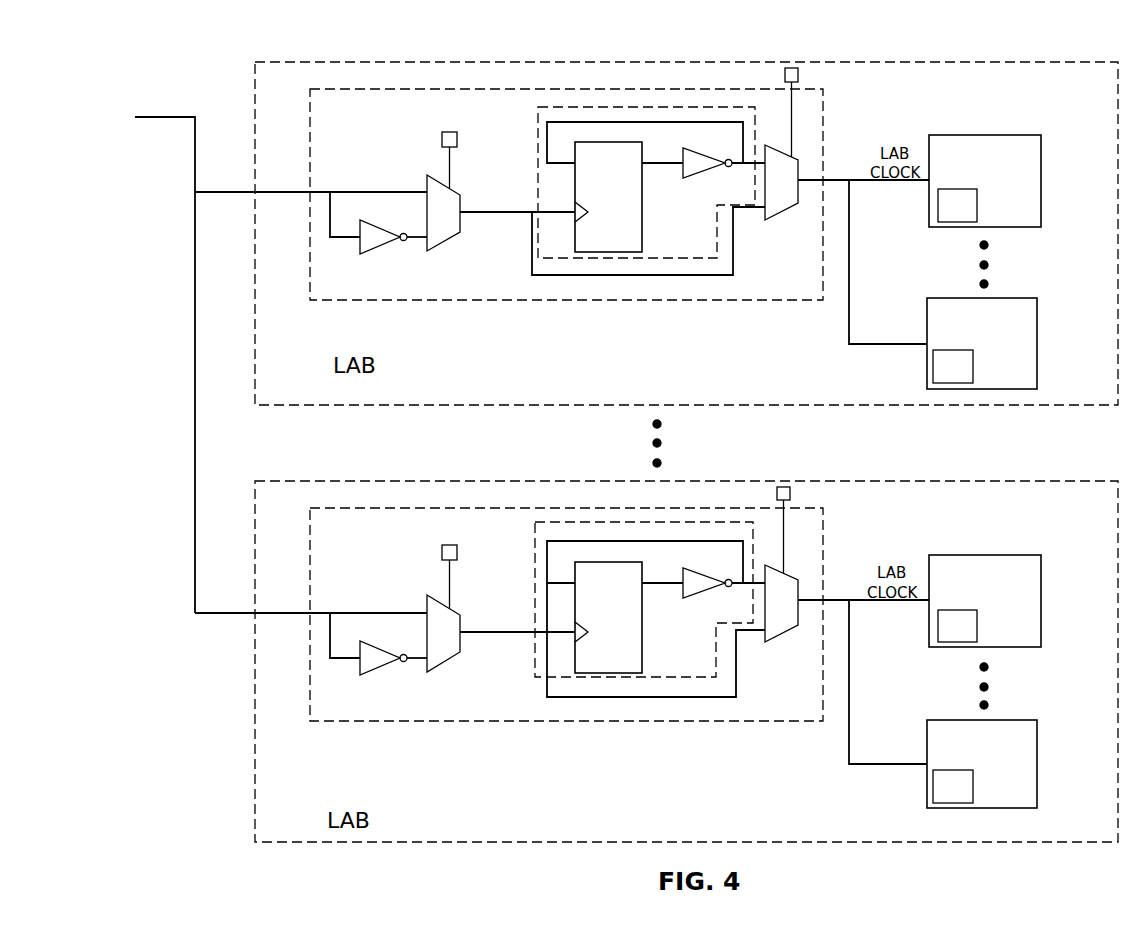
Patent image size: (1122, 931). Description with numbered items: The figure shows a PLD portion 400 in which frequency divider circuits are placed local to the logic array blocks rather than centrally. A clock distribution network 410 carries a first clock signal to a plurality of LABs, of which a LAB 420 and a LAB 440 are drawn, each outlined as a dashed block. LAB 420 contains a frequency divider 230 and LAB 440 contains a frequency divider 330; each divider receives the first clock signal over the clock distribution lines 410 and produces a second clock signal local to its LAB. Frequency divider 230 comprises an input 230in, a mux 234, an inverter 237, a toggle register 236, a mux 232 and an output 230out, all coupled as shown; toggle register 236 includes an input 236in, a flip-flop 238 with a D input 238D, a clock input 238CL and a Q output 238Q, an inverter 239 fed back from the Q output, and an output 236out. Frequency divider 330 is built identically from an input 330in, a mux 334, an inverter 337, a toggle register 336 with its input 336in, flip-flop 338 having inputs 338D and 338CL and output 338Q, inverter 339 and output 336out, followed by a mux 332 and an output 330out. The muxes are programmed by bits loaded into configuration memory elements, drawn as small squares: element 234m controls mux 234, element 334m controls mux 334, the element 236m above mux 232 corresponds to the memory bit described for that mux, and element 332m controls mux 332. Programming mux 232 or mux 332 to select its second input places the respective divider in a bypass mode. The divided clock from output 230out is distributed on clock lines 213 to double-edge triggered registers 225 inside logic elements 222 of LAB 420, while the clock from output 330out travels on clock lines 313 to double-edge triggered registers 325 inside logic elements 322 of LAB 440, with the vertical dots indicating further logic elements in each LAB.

The PLD portion 400 is at (342, 879).
The clock distribution network 410 is at (180, 116).
The LAB 420 is at (255, 293).
The LAB 440 is at (254, 740).
The frequency divider 230 is at (583, 300).
The frequency divider 330 is at (518, 722).
The input 230in is at (305, 191).
The input 330in is at (300, 612).
The output 230out is at (825, 177).
The output 330out is at (825, 597).
The mux 234 is at (447, 242).
The mux 334 is at (447, 662).
The configuration memory element 234m is at (441, 139).
The configuration memory element 334m is at (441, 552).
The inverter 237 is at (368, 253).
The inverter 337 is at (368, 675).
The toggle register 236 is at (768, 107).
The toggle register 336 is at (766, 527).
The input 236in is at (532, 213).
The input 336in is at (530, 633).
The output 236out is at (757, 163).
The output 336out is at (757, 583).
The flip-flop 238 is at (642, 242).
The flip-flop 338 is at (642, 662).
The input 238D is at (571, 160).
The input 338D is at (571, 580).
The output 238Q is at (656, 163).
The output 338Q is at (656, 583).
The input 238CL is at (571, 205).
The input 338CL is at (571, 625).
The inverter 239 is at (700, 176).
The inverter 339 is at (700, 596).
The mux 232 is at (790, 207).
The mux 332 is at (790, 628).
The output multiplexer memory bit 236m is at (785, 75).
The configuration memory element 332m is at (777, 494).
The clock lines 213 is at (865, 182).
The clock lines 313 is at (865, 602).
The logic elements 222 is at (1042, 182).
The logic elements 322 is at (1042, 602).
The double-edge triggered registers 225 is at (977, 213).
The double-edge triggered registers 325 is at (977, 633).